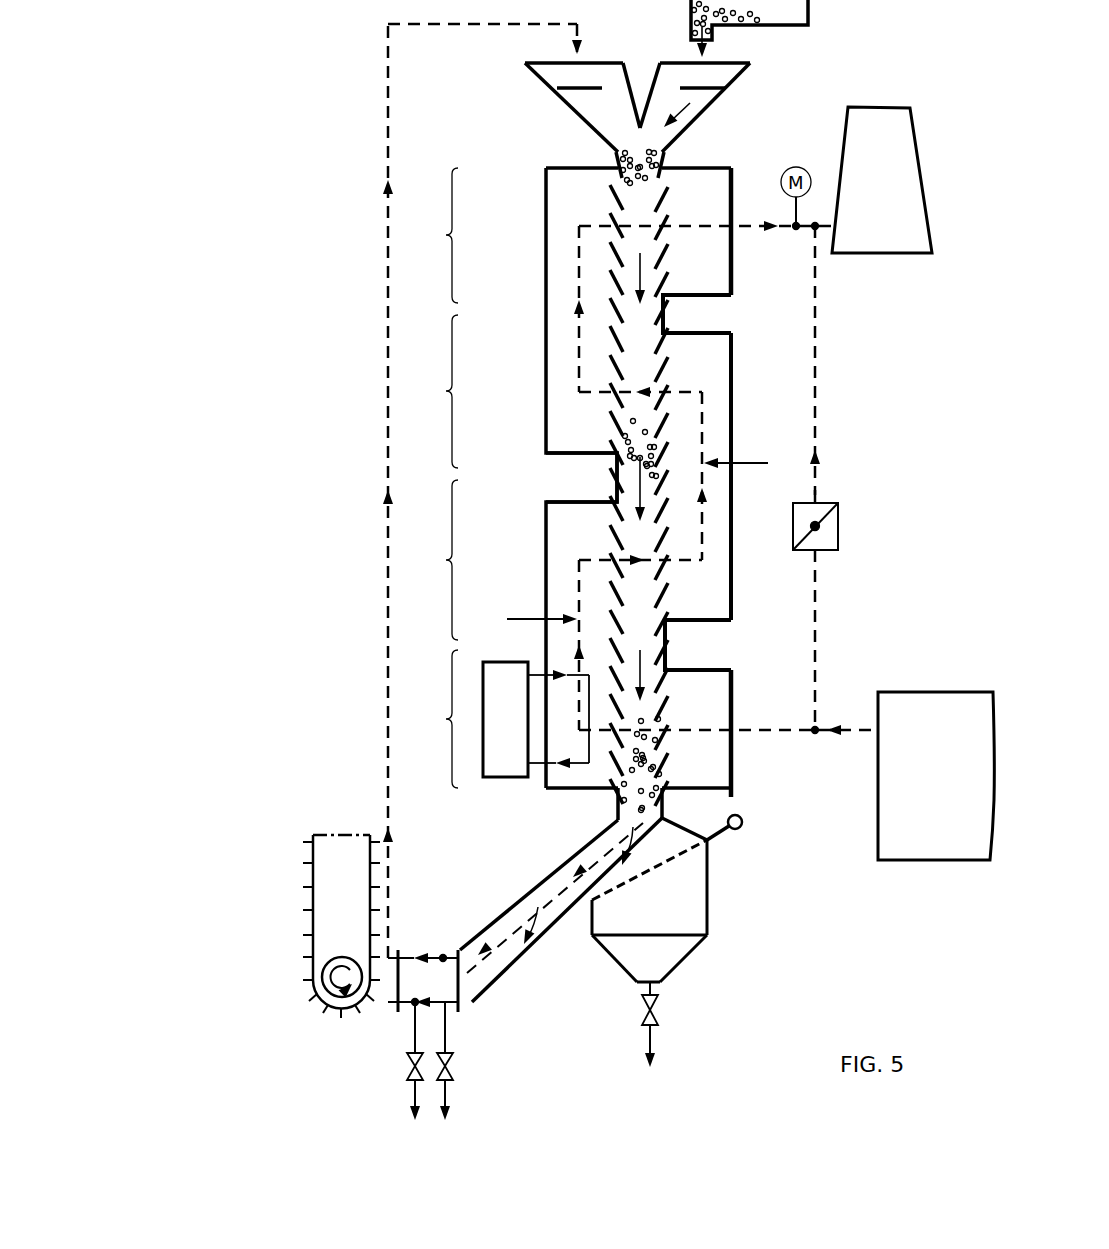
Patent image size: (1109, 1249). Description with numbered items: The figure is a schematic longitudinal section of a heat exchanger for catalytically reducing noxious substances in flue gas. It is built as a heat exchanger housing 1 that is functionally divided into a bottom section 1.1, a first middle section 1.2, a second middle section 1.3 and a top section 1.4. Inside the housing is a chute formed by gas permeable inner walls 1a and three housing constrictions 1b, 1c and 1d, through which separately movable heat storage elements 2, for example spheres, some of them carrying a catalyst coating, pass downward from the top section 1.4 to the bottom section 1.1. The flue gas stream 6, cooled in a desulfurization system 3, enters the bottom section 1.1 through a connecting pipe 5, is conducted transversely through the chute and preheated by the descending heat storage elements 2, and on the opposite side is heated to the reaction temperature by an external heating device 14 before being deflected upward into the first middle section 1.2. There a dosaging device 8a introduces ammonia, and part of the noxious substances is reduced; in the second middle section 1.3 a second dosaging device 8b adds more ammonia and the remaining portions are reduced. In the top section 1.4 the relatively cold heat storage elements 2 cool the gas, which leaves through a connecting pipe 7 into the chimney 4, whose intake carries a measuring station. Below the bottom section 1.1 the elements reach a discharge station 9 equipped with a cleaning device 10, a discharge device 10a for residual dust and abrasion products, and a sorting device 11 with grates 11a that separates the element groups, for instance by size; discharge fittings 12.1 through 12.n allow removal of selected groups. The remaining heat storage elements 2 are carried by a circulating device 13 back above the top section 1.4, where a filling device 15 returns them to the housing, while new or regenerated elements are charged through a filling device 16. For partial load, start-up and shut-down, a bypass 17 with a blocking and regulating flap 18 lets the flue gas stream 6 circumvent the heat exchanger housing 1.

The heat exchanger housing 1 is at (652, 623).
The gas permeable inner walls 1a is at (663, 358).
The housing constriction 1b is at (665, 640).
The housing constriction 1c is at (617, 477).
The housing constriction 1d is at (663, 310).
The bottom section 1.1 is at (429, 719).
The first middle section 1.2 is at (429, 560).
The second middle section 1.3 is at (429, 391).
The top section 1.4 is at (429, 235).
The heat storage elements 2 is at (742, 26).
The desulfurization system 3 is at (942, 794).
The chimney 4 is at (885, 225).
The connecting pipe 5 is at (735, 768).
The flue gas stream 6 is at (742, 225).
The connecting pipe 7 is at (733, 244).
The dosaging device 8a is at (523, 617).
The second dosaging device 8b is at (768, 462).
The discharge station 9 is at (617, 806).
The cleaning device 10 is at (657, 922).
The discharge device 10a is at (654, 1037).
The sorting device 11 is at (550, 923).
The grates 11a is at (530, 928).
The discharge fitting 12.1 is at (414, 1092).
The discharge fitting 12.n is at (447, 1089).
The circulating device 13 is at (348, 1013).
The external heating device 14 is at (514, 732).
The filling device 15 is at (575, 120).
The filling device 16 is at (703, 115).
The bypass 17 is at (818, 398).
The blocking and regulating flap 18 is at (830, 537).